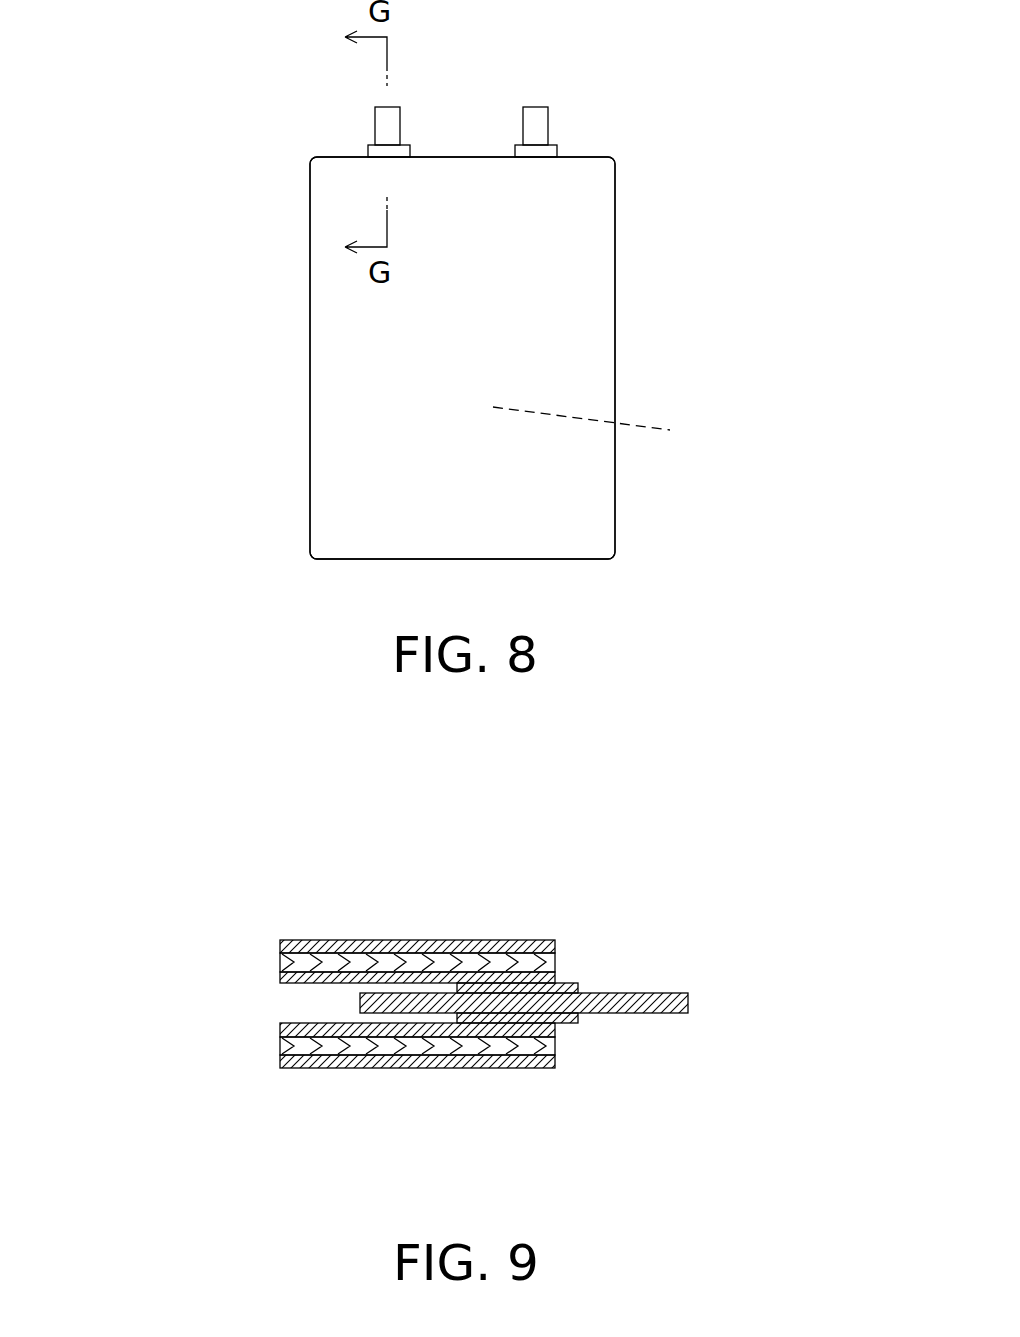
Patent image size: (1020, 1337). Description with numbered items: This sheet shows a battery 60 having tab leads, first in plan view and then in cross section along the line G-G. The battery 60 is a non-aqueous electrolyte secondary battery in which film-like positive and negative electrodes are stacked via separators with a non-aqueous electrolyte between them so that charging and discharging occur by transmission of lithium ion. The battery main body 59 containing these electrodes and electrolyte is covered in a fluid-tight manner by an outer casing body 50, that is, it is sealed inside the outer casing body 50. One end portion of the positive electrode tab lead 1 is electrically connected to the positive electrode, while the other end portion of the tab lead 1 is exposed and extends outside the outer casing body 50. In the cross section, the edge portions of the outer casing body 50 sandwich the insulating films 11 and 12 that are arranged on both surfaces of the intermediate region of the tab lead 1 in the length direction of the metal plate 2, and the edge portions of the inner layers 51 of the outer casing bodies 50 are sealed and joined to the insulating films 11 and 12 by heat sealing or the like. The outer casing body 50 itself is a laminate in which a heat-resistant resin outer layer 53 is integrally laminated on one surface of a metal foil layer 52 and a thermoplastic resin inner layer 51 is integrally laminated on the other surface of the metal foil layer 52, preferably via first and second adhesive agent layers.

In FIG. 9, the tab lead 1 is at (589, 1000).
In FIG. 8, the metal plate 2 is at (377, 120).
In FIG. 9, the metal plate 2 is at (688, 1003).
In FIG. 8, the insulating film 11 is at (367, 153).
In FIG. 9, the insulating film 11 is at (578, 988).
In FIG. 9, the insulating film 12 is at (609, 1044).
In FIG. 8, the outer casing body 50 is at (555, 357).
In FIG. 9, the outer casing body 50 is at (331, 1012).
In FIG. 9, the thermoplastic resin layer (inner layer) 51 is at (361, 1012).
In FIG. 9, the metal foil layer 52 is at (275, 960).
In FIG. 9, the heat-resistant resin layer (outer layer) 53 is at (278, 947).
In FIG. 8, the battery main body 59 is at (602, 431).
In FIG. 8, the battery 60 is at (700, 88).